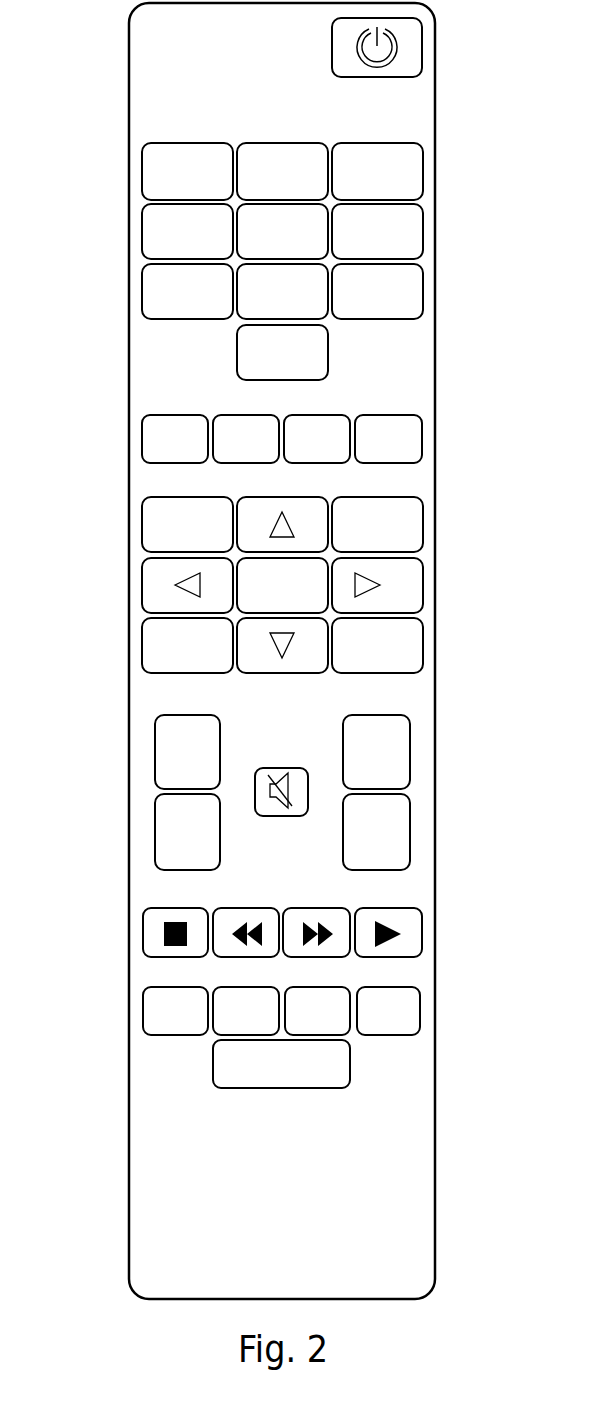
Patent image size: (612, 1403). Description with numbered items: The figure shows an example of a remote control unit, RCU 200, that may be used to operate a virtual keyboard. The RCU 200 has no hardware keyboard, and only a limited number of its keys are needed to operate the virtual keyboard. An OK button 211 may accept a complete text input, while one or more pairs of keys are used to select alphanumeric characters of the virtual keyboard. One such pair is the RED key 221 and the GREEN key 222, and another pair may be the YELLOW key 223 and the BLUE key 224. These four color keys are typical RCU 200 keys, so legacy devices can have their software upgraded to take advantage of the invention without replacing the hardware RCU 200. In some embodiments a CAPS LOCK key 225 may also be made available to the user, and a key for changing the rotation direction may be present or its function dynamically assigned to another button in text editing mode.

The RCU 200 is at (510, 338).
The OK button 211 is at (309, 580).
The RED key 221 is at (177, 1021).
The GREEN key 222 is at (246, 997).
The YELLOW key 223 is at (314, 997).
The BLUE key 224 is at (388, 1022).
The CAPS LOCK key 225 is at (338, 1063).